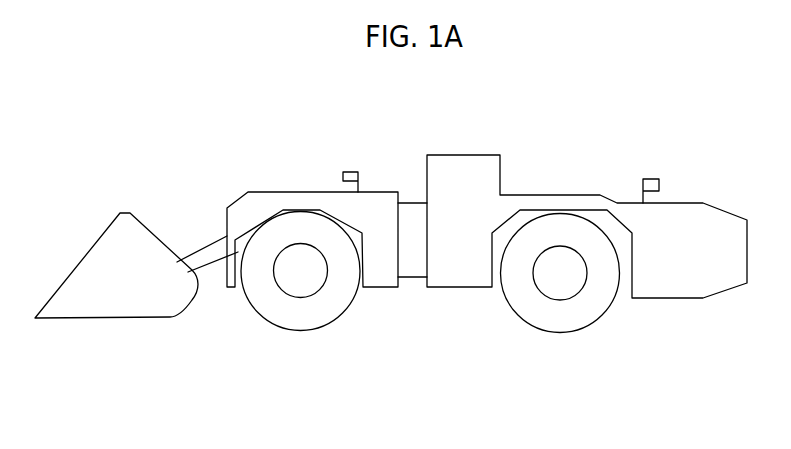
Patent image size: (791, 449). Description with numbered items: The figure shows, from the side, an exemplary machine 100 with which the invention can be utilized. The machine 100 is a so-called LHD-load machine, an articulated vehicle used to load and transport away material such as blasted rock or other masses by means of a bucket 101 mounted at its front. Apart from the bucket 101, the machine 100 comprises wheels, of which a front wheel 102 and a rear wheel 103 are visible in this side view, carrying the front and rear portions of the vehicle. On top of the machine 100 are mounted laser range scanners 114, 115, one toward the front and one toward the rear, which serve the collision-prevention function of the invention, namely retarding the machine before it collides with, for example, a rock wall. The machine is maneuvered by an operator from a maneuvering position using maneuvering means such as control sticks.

The machine 100 is at (667, 98).
The bucket 101 is at (118, 302).
The wheel 102 is at (302, 317).
The wheel 103 is at (560, 318).
The laser range scanner 114 is at (345, 175).
The laser range scanner 115 is at (659, 184).